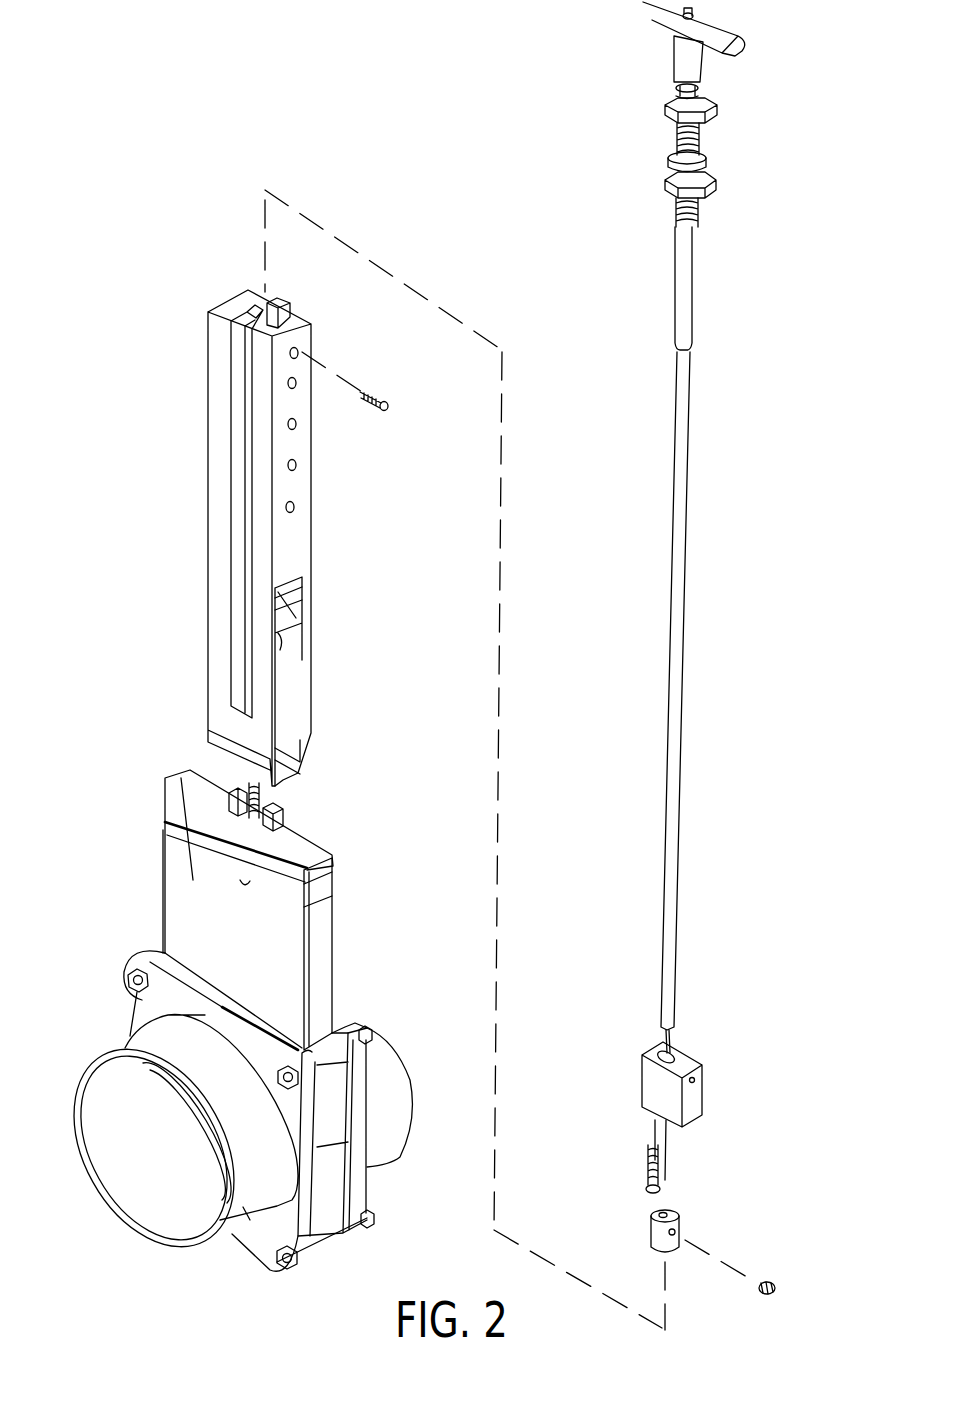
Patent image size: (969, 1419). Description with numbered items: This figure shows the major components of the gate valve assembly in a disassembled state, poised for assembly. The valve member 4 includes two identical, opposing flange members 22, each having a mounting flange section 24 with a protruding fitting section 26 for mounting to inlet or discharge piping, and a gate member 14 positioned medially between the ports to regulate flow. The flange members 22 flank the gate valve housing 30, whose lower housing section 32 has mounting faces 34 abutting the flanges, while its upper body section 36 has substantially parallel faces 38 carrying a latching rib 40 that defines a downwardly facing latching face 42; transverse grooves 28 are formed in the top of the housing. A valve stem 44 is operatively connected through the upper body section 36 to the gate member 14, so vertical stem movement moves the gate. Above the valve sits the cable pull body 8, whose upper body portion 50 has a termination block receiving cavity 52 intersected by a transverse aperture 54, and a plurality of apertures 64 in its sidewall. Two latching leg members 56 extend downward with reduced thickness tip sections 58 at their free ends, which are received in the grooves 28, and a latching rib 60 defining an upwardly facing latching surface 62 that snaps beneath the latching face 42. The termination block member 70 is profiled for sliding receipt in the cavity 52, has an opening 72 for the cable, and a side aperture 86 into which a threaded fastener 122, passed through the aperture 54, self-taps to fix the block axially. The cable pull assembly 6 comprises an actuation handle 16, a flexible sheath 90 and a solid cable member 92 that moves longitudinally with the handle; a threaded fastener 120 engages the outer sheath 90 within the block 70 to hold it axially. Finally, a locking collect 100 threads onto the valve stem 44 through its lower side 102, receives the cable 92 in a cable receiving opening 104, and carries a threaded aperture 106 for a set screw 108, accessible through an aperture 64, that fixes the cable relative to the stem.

The valve member 4 is at (110, 914).
The cable pull assembly 6 is at (708, 397).
The cable pull body 8 is at (200, 406).
The gate member 14 is at (198, 1124).
The actuation handle 16 is at (718, 30).
The flange members 22 is at (352, 980).
The mounting flange section 24 is at (380, 1095).
The protruding fitting section 26 is at (380, 1122).
The transverse grooves 28 is at (233, 1008).
The gate valve housing 30 is at (177, 883).
The lower housing section 32 is at (330, 1168).
The mounting faces 34 is at (370, 1070).
The upper body section 36 is at (303, 851).
The parallel faces 38 is at (229, 936).
The latching rib 40 is at (180, 772).
The latching face 42 is at (262, 882).
The valve stem 44 is at (240, 788).
The upper body portion 50 is at (298, 486).
The termination block receiving cavity 52 is at (250, 312).
The aperture 54 is at (300, 350).
The latching leg members 56 is at (218, 640).
The reduced thickness tip sections 58 is at (298, 777).
The latching rib 60 is at (302, 610).
The latching surface 62 is at (298, 572).
The apertures 64 is at (287, 507).
The termination block member 70 is at (712, 1040).
The opening 72 is at (671, 1053).
The aperture 86 is at (695, 1081).
The flexible sheath 90 is at (681, 507).
The solid cable member 92 is at (668, 1154).
The locking collect 100 is at (708, 1220).
The lower side 102 is at (670, 1253).
The cable receiving opening 104 is at (662, 1213).
The threaded aperture 106 is at (668, 1234).
The set screw 108 is at (770, 1281).
The threaded fastener 120 is at (650, 1160).
The threaded fastener 122 is at (380, 400).